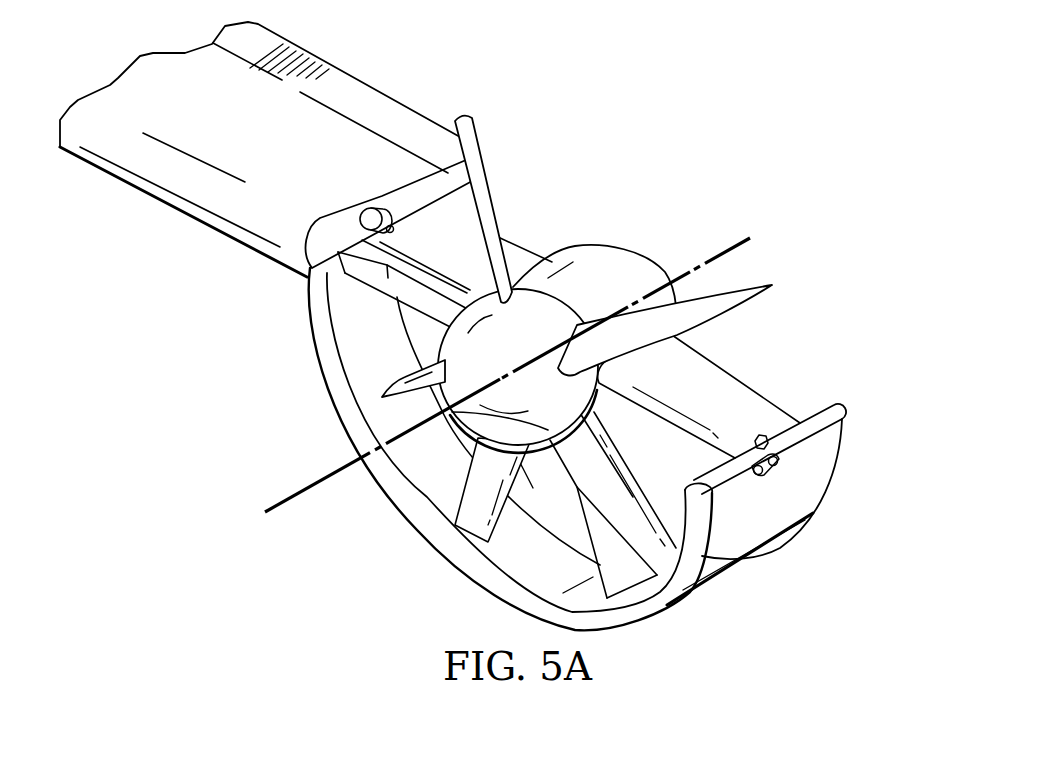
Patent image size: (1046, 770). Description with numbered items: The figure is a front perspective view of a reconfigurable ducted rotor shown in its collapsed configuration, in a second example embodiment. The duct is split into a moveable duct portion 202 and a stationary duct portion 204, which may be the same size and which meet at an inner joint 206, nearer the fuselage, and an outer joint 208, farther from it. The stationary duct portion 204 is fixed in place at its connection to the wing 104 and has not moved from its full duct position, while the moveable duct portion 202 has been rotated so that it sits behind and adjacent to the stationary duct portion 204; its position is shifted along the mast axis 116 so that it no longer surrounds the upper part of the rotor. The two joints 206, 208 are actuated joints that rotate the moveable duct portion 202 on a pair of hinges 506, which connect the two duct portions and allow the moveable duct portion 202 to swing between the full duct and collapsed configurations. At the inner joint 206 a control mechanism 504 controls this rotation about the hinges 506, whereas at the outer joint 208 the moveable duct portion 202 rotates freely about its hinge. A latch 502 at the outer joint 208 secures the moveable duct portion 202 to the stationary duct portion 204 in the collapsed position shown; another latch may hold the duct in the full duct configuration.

The wing 104 is at (168, 205).
The mast axis 116 is at (282, 501).
The moveable duct portion 202 is at (785, 548).
The stationary duct portion 204 is at (411, 524).
The inner joint 206 is at (323, 221).
The outer joint 208 is at (743, 440).
The latch 502 is at (770, 468).
The control mechanism 504 is at (379, 207).
The hinges 506 is at (389, 226).